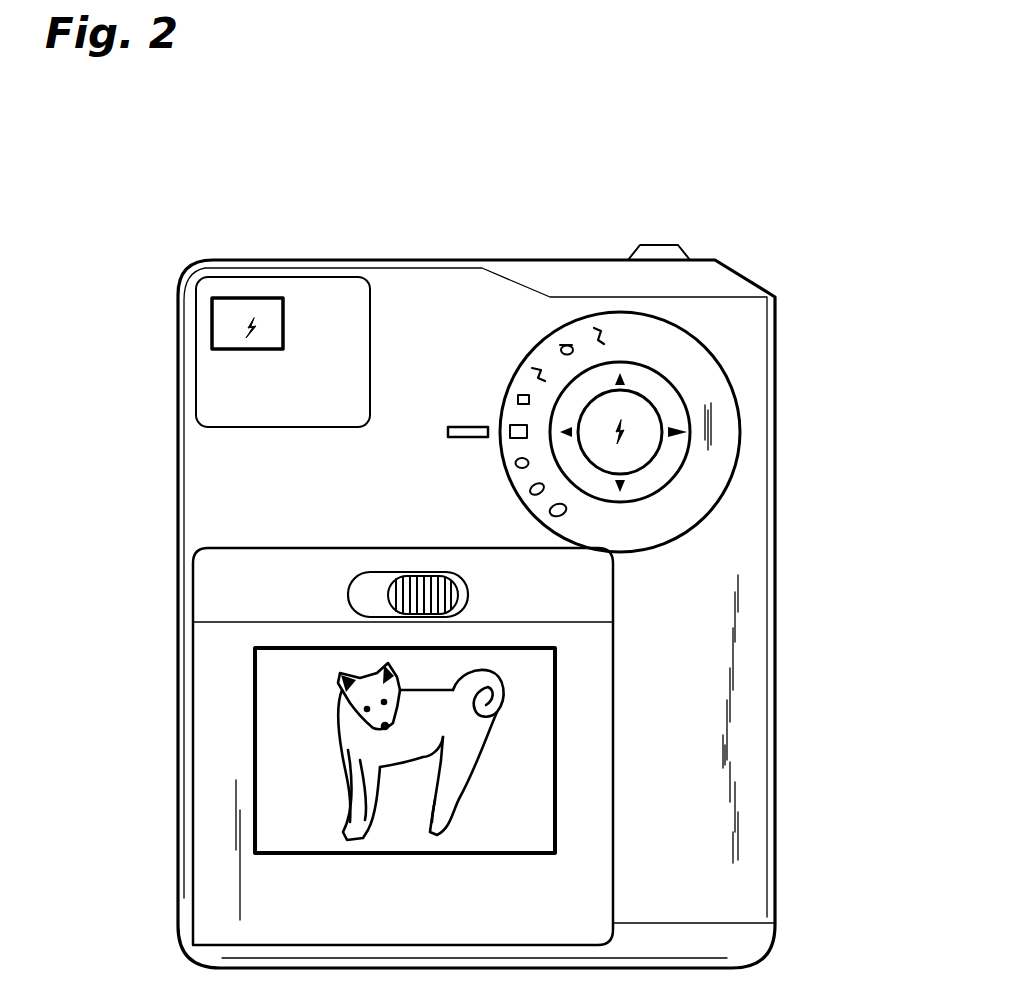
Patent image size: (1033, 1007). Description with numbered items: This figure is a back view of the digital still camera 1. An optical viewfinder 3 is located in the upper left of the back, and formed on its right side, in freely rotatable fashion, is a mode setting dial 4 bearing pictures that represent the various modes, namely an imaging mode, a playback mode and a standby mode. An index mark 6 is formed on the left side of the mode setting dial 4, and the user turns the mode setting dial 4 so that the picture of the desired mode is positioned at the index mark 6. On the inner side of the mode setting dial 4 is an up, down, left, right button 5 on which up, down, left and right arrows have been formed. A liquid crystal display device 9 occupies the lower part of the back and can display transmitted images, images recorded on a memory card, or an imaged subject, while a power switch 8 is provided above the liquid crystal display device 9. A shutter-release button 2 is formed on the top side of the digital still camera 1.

The digital still camera 1 is at (847, 254).
The shutter-release button 2 is at (656, 250).
The optical viewfinder 3 is at (230, 308).
The mode setting dial 4 is at (703, 380).
The up, down, left, right button 5 is at (672, 468).
The index mark 6 is at (467, 427).
The power switch 8 is at (397, 575).
The liquid crystal display device 9 is at (505, 762).